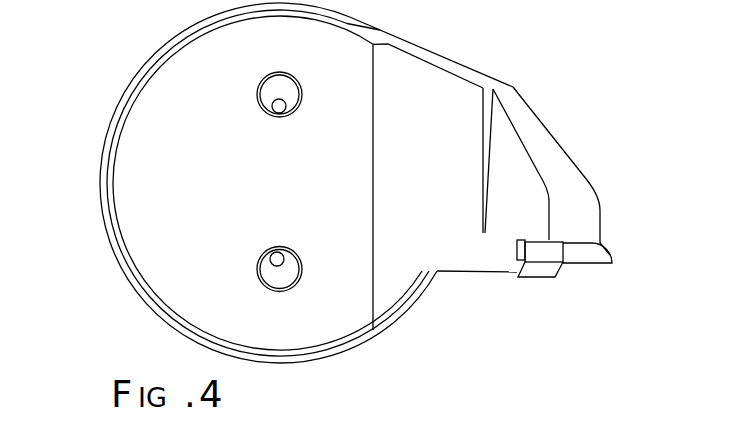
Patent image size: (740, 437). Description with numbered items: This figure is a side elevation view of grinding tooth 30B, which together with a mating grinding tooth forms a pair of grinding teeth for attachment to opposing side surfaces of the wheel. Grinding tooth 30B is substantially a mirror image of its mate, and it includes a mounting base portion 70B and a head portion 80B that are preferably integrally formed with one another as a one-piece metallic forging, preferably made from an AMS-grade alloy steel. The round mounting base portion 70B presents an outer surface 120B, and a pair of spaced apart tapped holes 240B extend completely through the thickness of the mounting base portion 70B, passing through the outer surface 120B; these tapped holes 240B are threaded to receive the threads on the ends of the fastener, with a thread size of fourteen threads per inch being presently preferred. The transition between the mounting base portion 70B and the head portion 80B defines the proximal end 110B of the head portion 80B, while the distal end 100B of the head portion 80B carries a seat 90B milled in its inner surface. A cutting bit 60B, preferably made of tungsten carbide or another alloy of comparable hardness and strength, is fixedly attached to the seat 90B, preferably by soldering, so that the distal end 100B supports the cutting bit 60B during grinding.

The grinding tooth 30B is at (603, 163).
The cutting bit 60B is at (582, 265).
The mounting base portion 70B is at (148, 174).
The head portion 80B is at (503, 143).
The seat 90B is at (612, 258).
The distal end 100B is at (580, 220).
The proximal end 110B is at (415, 258).
The outer surface 120B is at (250, 219).
The tapped holes 240B is at (277, 113).